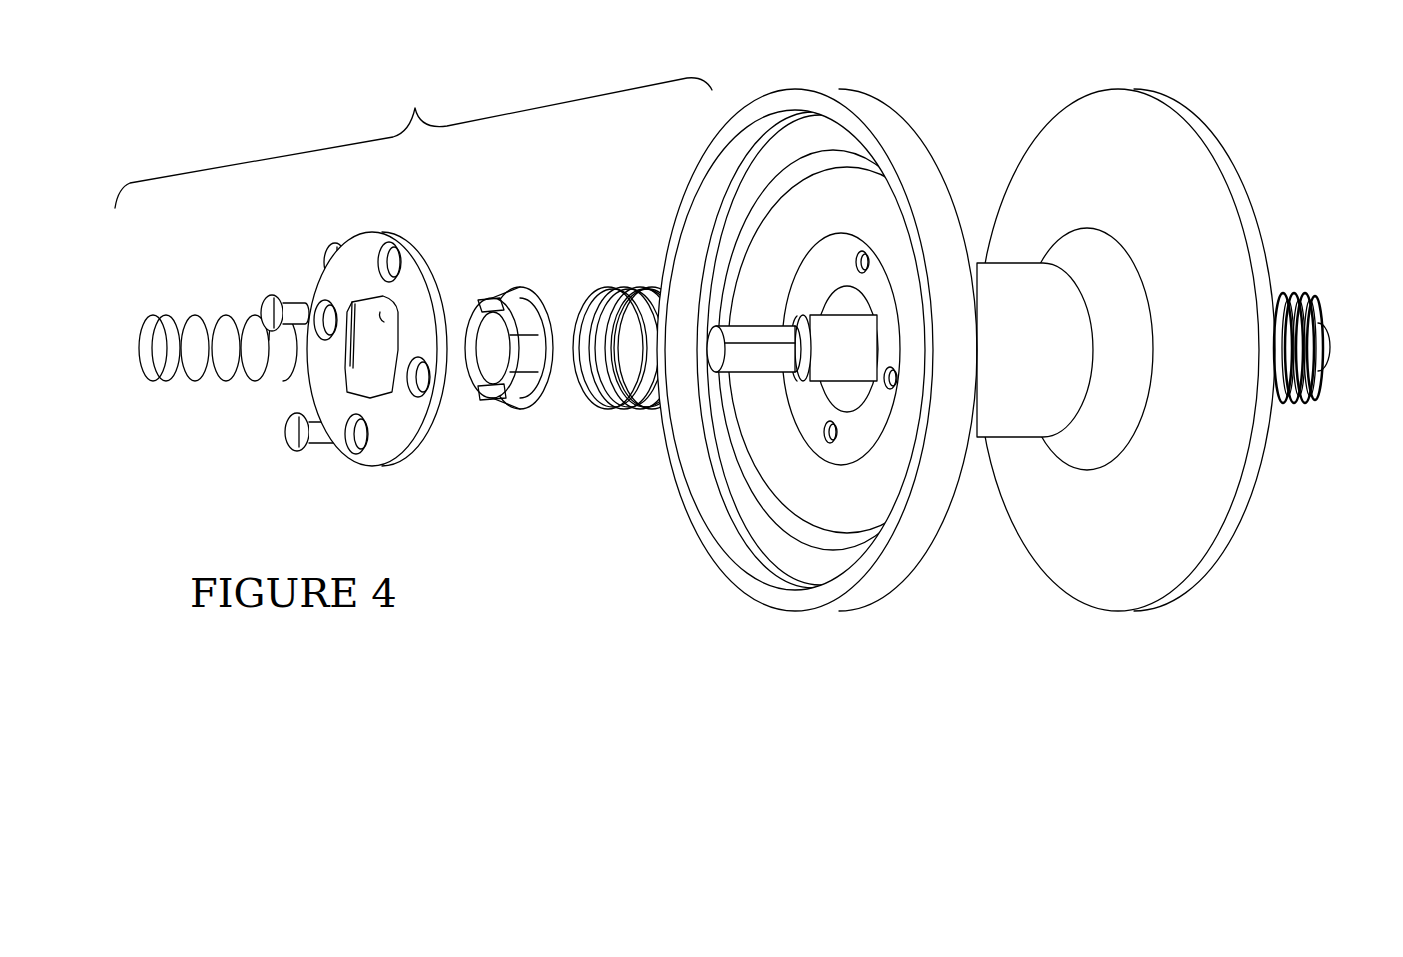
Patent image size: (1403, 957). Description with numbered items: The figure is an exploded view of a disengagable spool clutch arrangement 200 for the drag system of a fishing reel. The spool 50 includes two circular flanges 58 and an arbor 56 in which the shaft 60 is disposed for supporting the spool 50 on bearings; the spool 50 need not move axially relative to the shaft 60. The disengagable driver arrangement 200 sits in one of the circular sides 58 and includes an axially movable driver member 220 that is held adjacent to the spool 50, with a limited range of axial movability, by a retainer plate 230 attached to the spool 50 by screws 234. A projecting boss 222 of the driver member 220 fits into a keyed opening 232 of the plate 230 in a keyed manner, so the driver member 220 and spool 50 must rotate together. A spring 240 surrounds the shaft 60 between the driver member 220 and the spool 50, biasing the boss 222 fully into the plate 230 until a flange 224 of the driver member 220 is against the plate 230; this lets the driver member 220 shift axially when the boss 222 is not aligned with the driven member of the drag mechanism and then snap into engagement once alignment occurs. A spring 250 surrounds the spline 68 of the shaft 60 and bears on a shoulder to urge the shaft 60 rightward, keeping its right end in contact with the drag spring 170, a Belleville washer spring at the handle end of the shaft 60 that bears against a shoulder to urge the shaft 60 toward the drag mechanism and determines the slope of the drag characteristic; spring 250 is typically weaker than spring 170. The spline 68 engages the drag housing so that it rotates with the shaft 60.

The disengagable spool clutch arrangement 200 is at (413, 135).
The spring 250 is at (155, 384).
The screws 234 is at (330, 258).
The retainer plate 230 is at (393, 355).
The keyed opening 232 is at (397, 322).
The driver member 220 is at (513, 340).
The projecting boss 222 is at (480, 302).
The flange 224 is at (520, 290).
The spring 240 is at (617, 417).
The spool 50 is at (970, 198).
The circular flanges 58 is at (966, 350).
The arbor 56 is at (1043, 353).
The shaft 60 is at (1009, 451).
The spline 68 is at (764, 355).
The spring 170 is at (1308, 297).